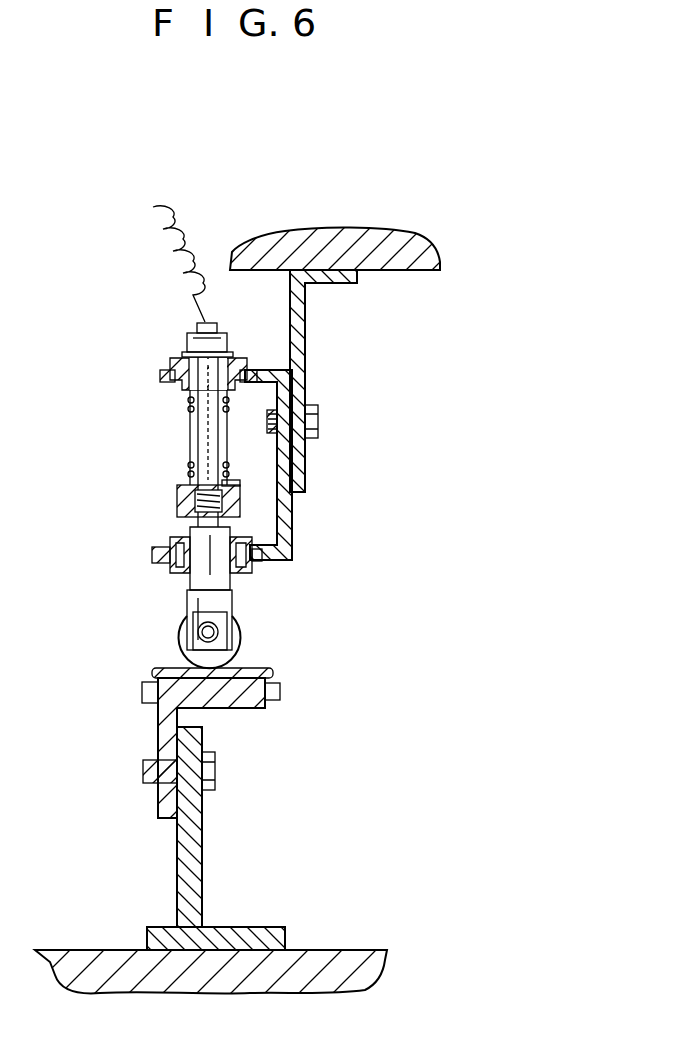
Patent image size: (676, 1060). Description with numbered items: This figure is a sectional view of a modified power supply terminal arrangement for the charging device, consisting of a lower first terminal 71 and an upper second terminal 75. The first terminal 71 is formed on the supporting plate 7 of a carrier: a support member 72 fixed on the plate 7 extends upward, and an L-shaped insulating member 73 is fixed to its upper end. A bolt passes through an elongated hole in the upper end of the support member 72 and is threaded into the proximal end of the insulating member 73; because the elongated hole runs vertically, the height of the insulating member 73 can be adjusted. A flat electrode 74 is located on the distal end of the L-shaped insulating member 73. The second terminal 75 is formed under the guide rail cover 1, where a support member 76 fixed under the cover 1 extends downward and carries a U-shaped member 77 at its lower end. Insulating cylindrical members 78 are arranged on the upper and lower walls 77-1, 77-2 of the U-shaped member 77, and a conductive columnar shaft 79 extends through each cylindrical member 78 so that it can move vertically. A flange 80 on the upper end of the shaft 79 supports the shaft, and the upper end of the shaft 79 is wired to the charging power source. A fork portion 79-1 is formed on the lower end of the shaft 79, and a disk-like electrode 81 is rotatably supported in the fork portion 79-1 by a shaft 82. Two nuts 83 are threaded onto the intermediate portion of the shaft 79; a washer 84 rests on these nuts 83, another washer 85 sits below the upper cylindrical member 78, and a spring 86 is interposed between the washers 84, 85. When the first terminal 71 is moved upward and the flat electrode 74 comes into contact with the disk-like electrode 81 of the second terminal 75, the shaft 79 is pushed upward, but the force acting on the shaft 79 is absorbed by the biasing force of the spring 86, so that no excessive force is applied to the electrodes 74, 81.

The guide rail cover 1 is at (313, 238).
The supporting plate 7 is at (312, 990).
The first terminal 71 is at (280, 853).
The support member 72 is at (202, 885).
The L-shaped insulating member 73 is at (242, 705).
The flat electrode 74 is at (258, 670).
The second terminal 75 is at (355, 385).
The support member 76 is at (305, 338).
The U-shaped member 77 is at (290, 533).
The upper wall 77-1 is at (160, 374).
The lower wall 77-2 is at (152, 555).
The cylindrical member 78 is at (178, 385).
The conductive columnar shaft 79 is at (196, 430).
The fork portion 79-1 is at (232, 602).
The flange 80 is at (182, 354).
The disk-like electrode 81 is at (241, 637).
The shaft 82 is at (198, 633).
The nuts 83 is at (177, 490).
The washer 84 is at (230, 482).
The washer 85 is at (232, 390).
The spring 86 is at (190, 465).